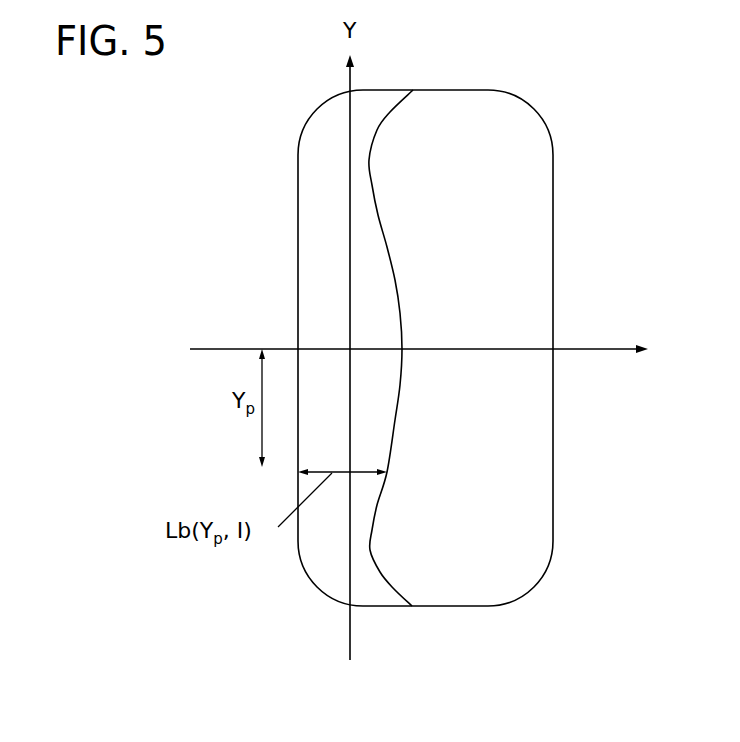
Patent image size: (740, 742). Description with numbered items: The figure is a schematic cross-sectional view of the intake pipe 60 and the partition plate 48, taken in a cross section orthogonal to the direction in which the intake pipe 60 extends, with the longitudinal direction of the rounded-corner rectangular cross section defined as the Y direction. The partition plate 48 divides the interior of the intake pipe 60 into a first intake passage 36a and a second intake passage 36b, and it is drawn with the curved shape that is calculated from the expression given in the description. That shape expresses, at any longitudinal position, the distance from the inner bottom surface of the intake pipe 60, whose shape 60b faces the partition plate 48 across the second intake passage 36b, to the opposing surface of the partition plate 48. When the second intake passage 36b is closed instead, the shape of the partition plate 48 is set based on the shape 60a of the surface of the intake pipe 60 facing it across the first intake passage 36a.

The first intake passage 36a is at (501, 125).
The second intake passage 36b is at (332, 140).
The partition plate 48 is at (400, 100).
The intake pipe 60 is at (465, 88).
The shape of the surface of the intake pipe facing the partition plate with the firs 60a is at (543, 117).
The shape of the opposing surface of the intake pipe facing the partition plate with 60b is at (305, 137).